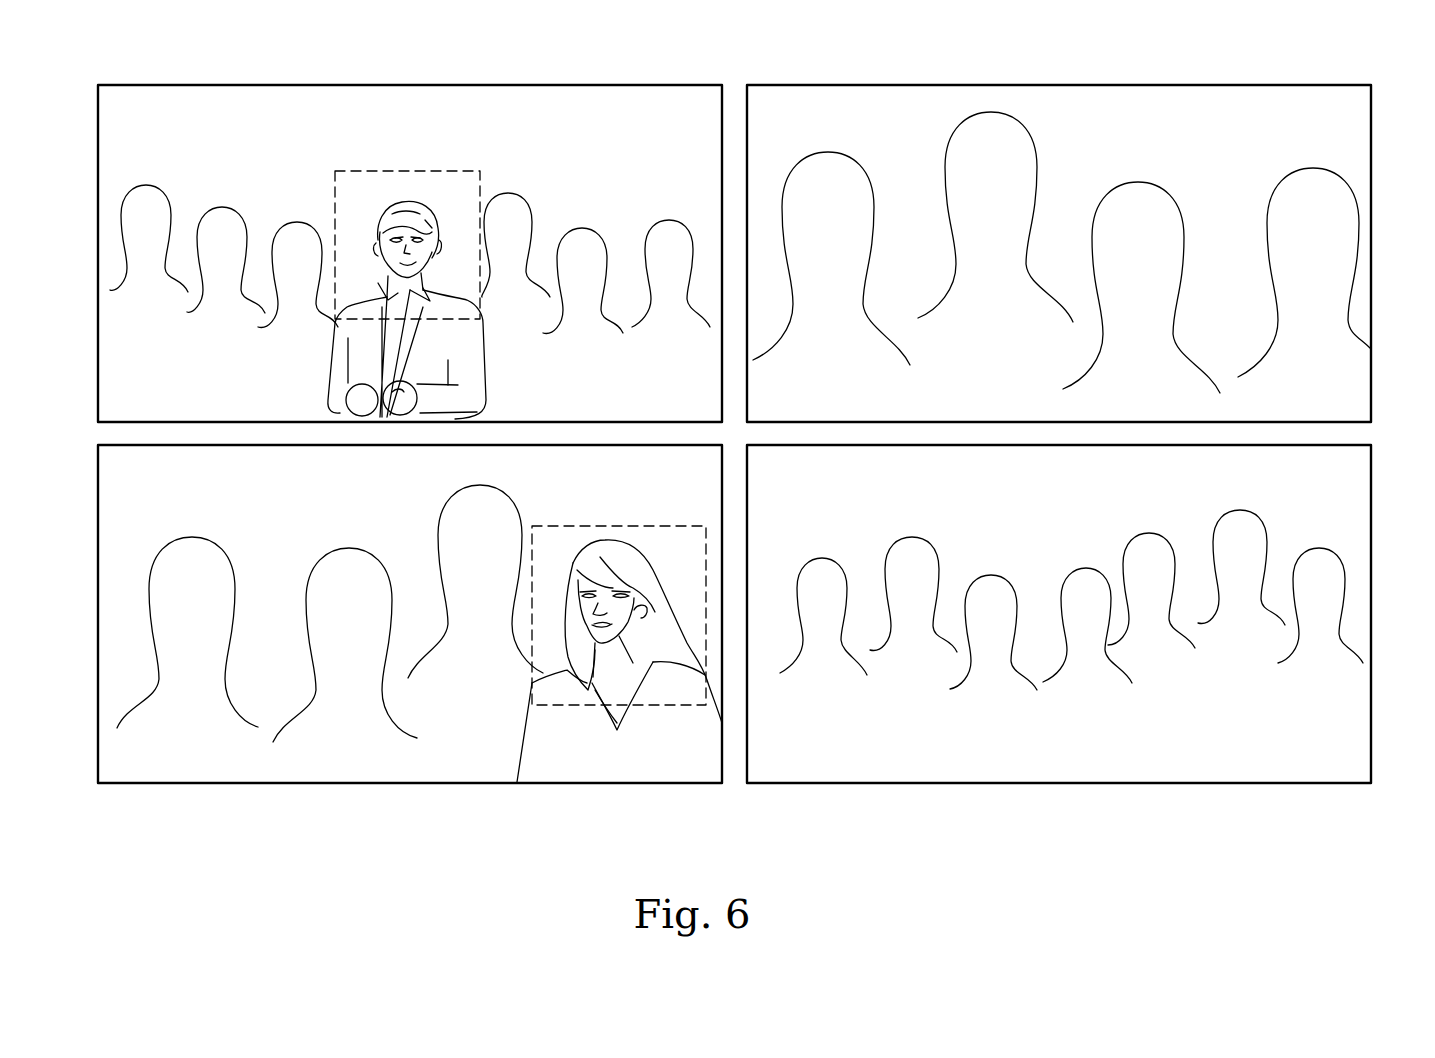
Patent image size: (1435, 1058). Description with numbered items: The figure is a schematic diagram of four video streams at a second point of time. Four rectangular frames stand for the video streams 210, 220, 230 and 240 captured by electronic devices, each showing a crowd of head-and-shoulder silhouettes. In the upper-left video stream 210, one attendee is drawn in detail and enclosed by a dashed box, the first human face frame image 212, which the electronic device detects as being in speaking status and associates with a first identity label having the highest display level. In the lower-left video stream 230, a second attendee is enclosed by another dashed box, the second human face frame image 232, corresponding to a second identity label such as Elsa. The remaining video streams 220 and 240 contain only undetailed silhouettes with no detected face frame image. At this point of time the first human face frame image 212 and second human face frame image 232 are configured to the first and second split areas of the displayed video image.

The video stream 210 is at (410, 216).
The first human face frame image 212 is at (403, 169).
The video stream 220 is at (1275, 84).
The video stream 230 is at (410, 652).
The second human face frame image 232 is at (665, 705).
The video stream 240 is at (1272, 783).